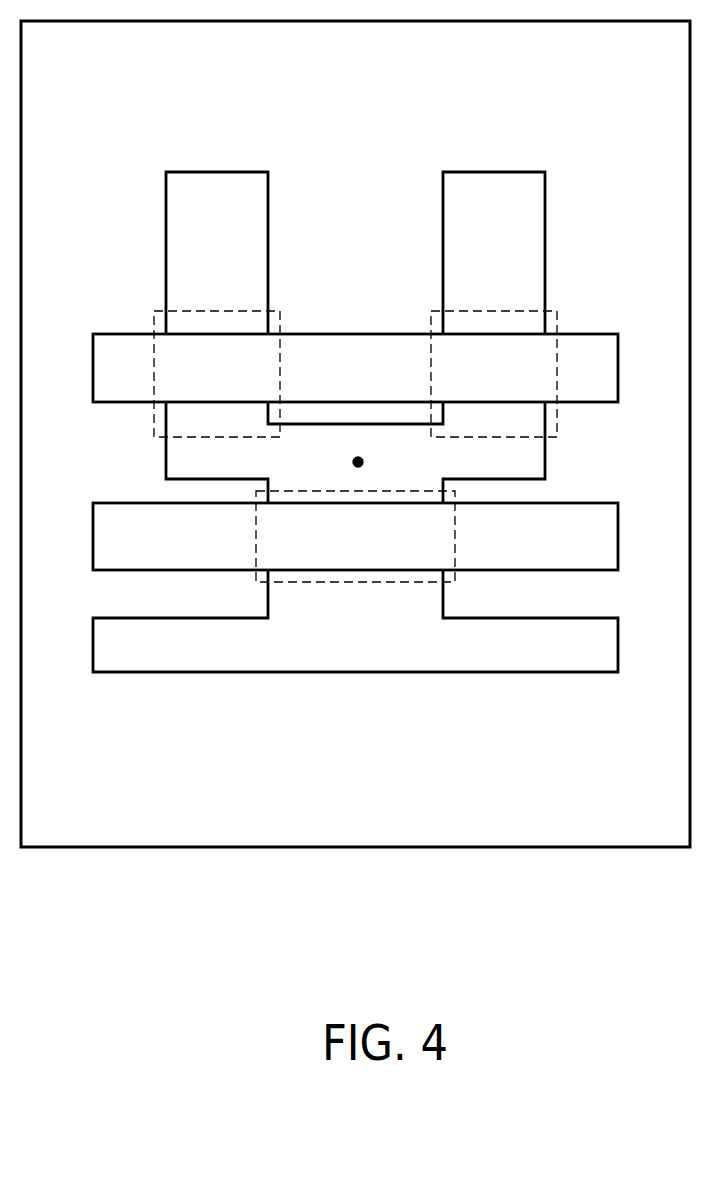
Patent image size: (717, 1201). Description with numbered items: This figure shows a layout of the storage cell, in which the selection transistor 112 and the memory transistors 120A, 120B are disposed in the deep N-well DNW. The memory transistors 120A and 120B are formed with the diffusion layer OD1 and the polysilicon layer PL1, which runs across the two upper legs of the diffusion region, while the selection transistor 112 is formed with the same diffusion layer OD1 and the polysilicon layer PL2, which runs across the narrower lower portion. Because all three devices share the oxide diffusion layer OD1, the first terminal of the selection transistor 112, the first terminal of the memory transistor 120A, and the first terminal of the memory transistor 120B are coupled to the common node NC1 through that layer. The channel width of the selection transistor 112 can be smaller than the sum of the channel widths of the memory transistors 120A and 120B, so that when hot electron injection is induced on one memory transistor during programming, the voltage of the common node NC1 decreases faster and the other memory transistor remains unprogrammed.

The deep N-well DNW is at (355, 434).
The diffusion layer OD1 is at (590, 171).
The polysilicon layer PL1 is at (355, 368).
The polysilicon layer PL2 is at (355, 536).
The memory transistor 120A is at (155, 311).
The memory transistor 120B is at (557, 311).
The selection transistor 112 is at (457, 545).
The common node NC1 is at (358, 457).